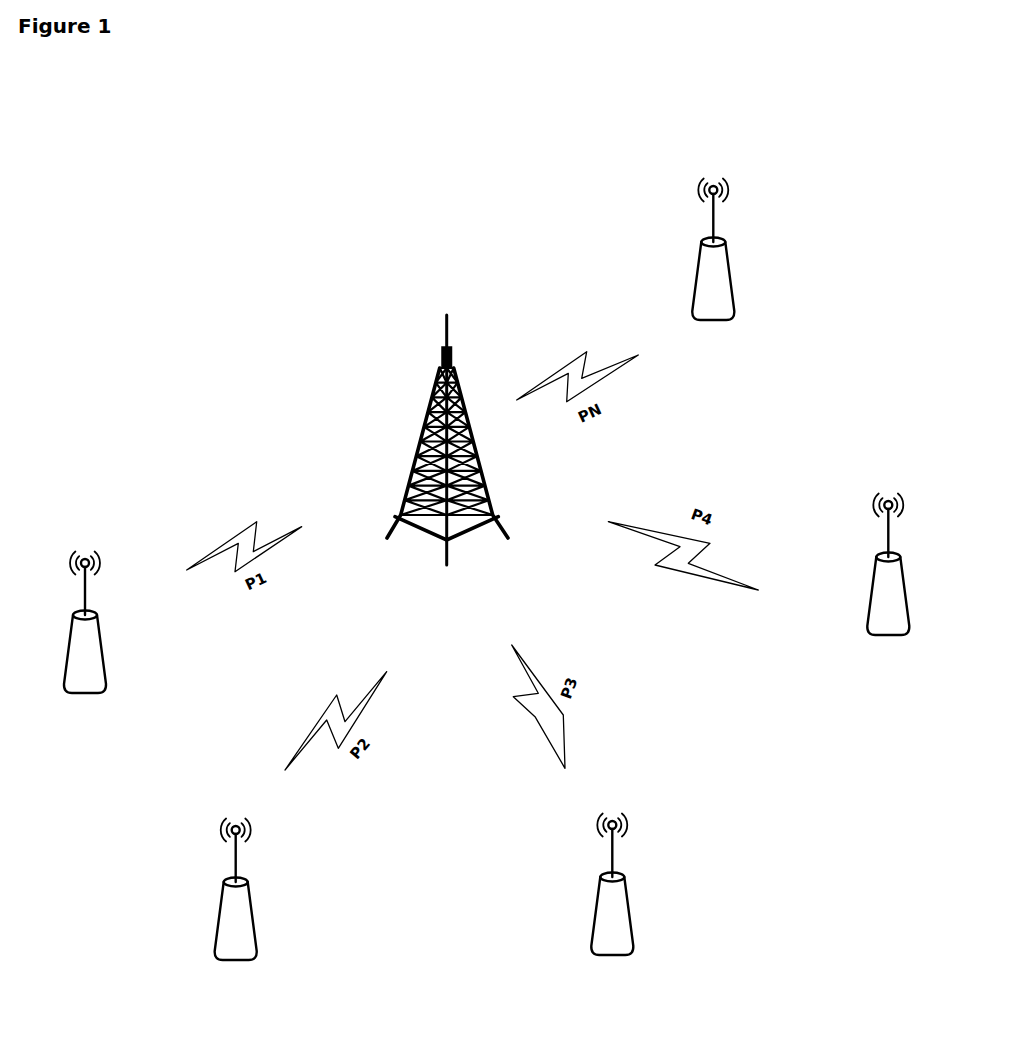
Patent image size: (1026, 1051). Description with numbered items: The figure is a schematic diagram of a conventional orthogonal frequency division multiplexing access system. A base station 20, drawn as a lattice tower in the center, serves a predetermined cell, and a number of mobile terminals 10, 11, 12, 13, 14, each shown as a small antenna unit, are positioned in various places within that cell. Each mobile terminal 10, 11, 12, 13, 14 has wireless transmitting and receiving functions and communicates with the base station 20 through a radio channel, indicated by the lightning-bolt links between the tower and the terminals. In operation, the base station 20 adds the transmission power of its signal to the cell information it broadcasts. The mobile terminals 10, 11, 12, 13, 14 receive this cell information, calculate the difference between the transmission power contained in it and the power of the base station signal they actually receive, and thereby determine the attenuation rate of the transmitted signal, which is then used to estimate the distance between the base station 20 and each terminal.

The mobile terminal 10 is at (85, 651).
The mobile terminal 11 is at (235, 918).
The mobile terminal 12 is at (612, 913).
The mobile terminal 13 is at (888, 593).
The mobile terminal 14 is at (713, 278).
The base station 20 is at (447, 466).